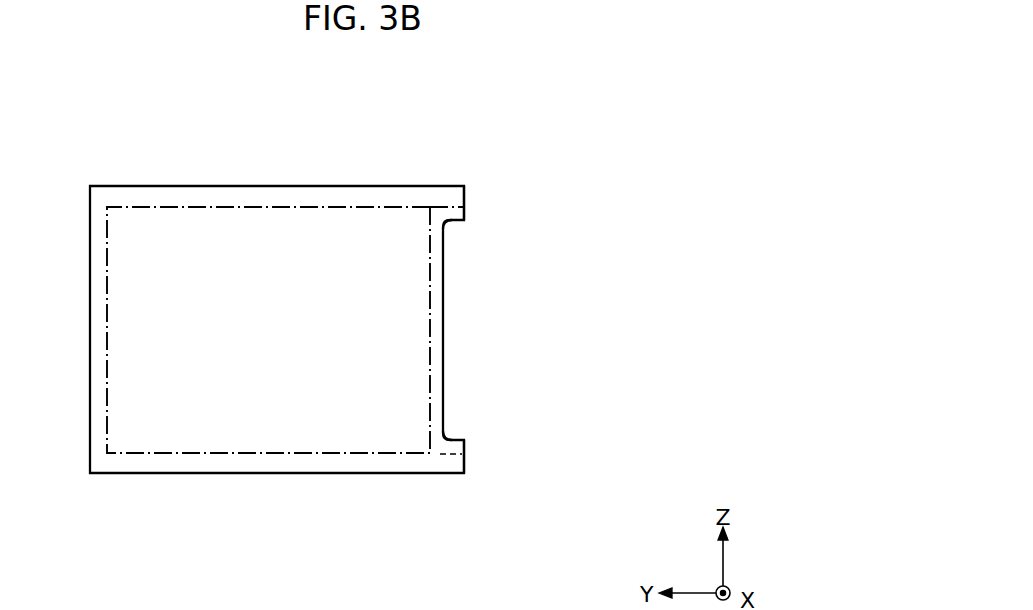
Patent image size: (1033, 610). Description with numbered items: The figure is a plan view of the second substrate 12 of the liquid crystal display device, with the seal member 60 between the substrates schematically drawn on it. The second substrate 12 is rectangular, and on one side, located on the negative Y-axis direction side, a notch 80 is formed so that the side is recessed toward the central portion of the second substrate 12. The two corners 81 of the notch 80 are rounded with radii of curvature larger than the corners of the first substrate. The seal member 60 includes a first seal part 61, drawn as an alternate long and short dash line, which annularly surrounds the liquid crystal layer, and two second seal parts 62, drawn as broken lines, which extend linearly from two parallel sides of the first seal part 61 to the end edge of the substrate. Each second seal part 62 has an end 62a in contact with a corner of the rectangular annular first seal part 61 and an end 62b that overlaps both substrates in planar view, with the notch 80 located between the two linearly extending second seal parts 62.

The second substrate 12 is at (537, 137).
The notch 80 is at (444, 277).
The corners of notch 81 is at (448, 226).
The seal member 60 is at (415, 530).
The first seal part 61 is at (328, 453).
The second seal part 62 is at (445, 208).
The end of second seal part 62a is at (431, 207).
The end of second seal part 62b is at (464, 187).